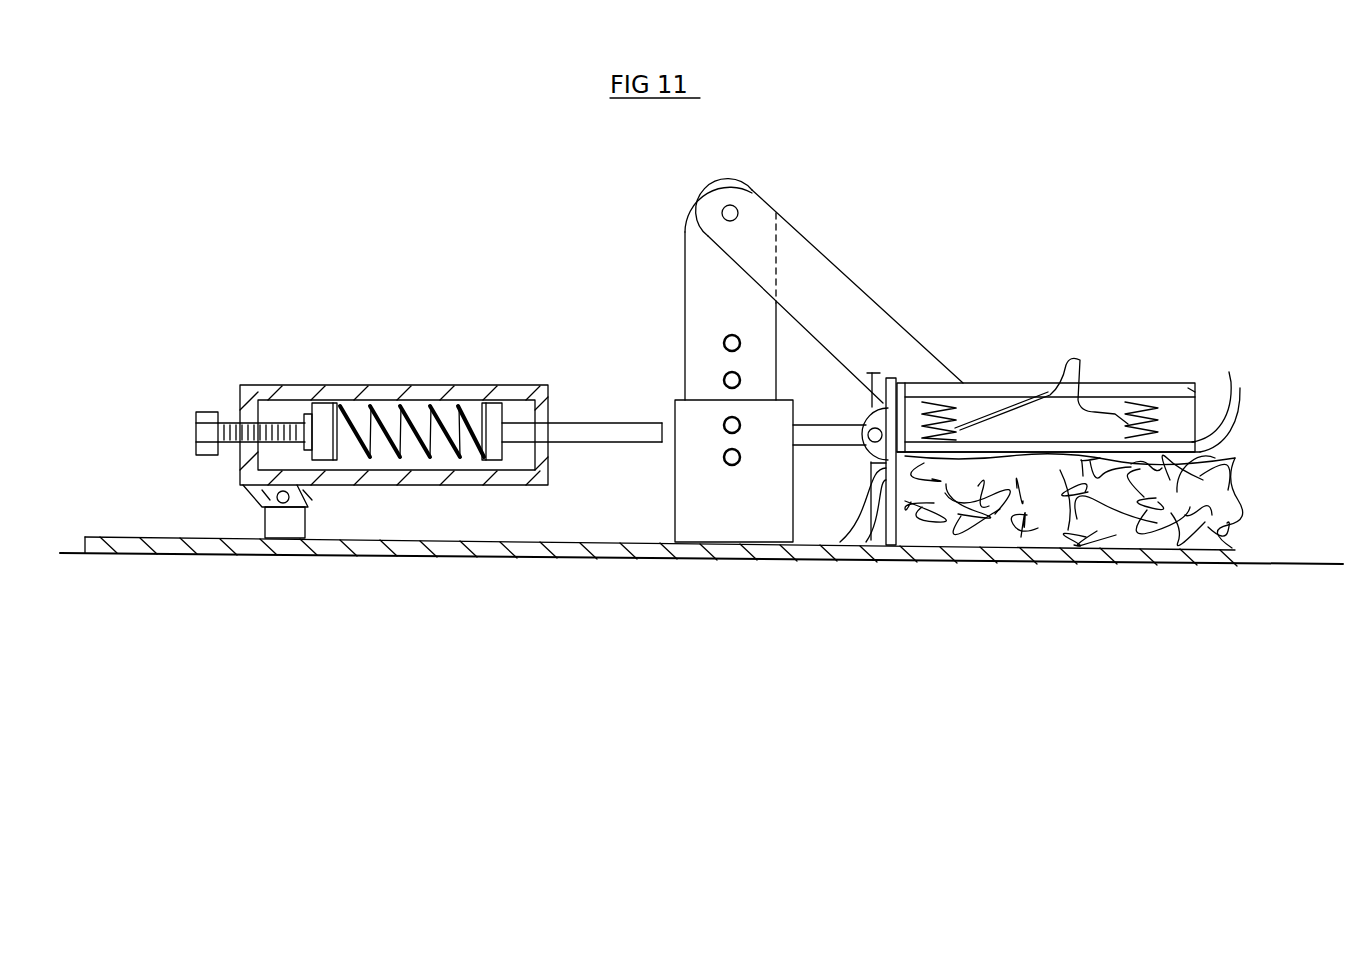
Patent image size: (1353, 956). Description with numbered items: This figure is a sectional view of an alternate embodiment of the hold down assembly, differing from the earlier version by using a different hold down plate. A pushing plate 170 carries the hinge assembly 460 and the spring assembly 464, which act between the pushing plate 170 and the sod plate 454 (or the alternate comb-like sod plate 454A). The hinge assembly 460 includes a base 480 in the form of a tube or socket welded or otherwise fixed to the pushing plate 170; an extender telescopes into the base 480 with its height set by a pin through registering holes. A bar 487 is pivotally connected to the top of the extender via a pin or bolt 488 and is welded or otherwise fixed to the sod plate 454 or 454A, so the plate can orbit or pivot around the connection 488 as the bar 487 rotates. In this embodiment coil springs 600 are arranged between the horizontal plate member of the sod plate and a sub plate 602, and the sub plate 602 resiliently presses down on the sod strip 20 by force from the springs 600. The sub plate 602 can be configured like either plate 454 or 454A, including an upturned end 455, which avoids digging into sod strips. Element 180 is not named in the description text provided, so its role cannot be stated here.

The sod strip 20 is at (1030, 540).
The pushing plate 170 is at (460, 560).
The bracket 180 is at (867, 500).
The sod plate 454 is at (997, 383).
The alternate sod plate 454A is at (1127, 345).
The upwardly curved end 455 is at (1229, 372).
The hinge assembly 460 is at (805, 396).
The spring assembly 464 is at (378, 378).
The base 480 is at (683, 487).
The bar 487 is at (857, 290).
The pin or bolt 488 is at (734, 208).
The coil spring 600 is at (1041, 384).
The sub plate 602 is at (1075, 445).